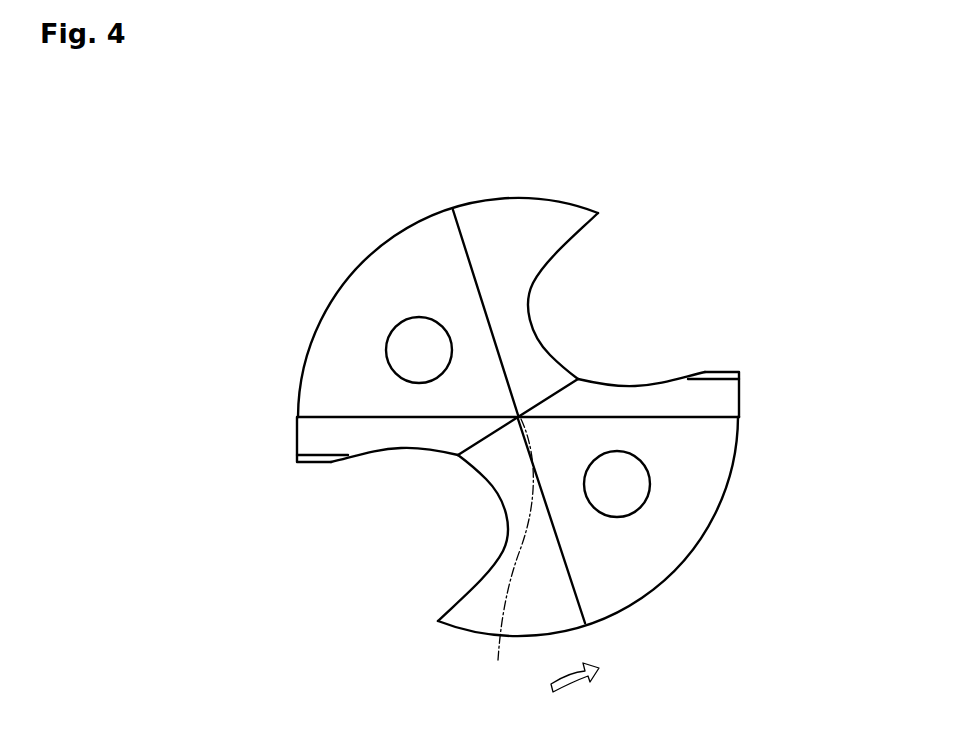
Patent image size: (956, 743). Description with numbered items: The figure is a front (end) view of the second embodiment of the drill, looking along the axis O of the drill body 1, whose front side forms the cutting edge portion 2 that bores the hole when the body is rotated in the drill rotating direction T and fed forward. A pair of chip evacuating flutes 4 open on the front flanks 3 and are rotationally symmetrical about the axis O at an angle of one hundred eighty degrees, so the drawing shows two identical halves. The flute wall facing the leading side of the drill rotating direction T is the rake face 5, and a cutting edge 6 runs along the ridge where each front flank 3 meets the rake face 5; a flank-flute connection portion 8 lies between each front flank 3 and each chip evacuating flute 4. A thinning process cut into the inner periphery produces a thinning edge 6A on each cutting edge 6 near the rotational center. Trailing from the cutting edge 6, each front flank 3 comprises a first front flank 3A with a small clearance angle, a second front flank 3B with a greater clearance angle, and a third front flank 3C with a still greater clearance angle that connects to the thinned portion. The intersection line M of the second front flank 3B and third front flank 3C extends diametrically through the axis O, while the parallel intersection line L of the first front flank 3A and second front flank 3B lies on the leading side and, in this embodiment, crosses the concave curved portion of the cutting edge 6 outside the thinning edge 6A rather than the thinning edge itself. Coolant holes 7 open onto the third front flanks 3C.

The drill body 1 is at (514, 398).
The cutting edge portion 2 is at (514, 398).
The front flank 3 is at (514, 417).
The first front flank 3A is at (313, 462).
The second front flank 3B is at (310, 438).
The third front flank 3C is at (320, 380).
The chip evacuating flute 4 is at (613, 277).
The rake face 5 is at (534, 410).
The cutting edge 6 is at (625, 386).
The thinning edge 6A is at (555, 380).
The coolant hole 7 is at (403, 343).
The flank-flute connection portion 8 is at (512, 227).
The intersection line L is at (325, 455).
The intersection line M is at (397, 417).
The axis O is at (511, 562).
The drill rotating direction T is at (575, 692).